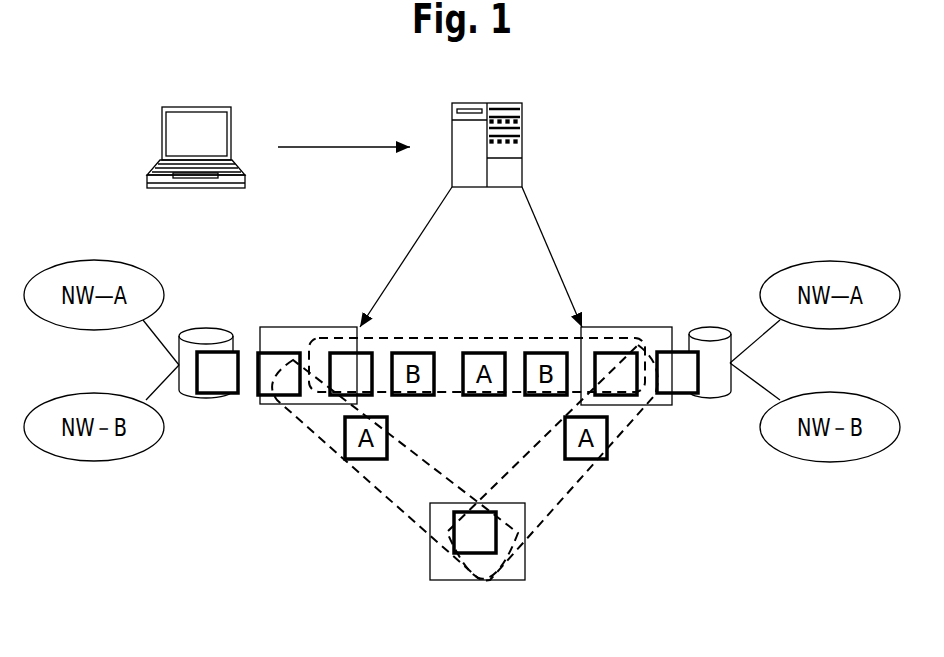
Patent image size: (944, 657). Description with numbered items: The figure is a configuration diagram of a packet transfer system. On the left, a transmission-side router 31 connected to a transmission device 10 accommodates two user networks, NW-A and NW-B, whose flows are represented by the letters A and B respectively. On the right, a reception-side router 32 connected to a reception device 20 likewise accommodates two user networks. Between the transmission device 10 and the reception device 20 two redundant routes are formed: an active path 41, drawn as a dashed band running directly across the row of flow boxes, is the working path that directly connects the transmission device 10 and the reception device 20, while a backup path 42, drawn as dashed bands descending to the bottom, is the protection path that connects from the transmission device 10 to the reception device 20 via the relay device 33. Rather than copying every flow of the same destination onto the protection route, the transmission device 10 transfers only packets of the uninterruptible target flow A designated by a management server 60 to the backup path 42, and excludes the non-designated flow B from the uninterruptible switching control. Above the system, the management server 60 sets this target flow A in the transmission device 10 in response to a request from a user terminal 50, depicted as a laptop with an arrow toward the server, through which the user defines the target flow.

The transmission device 10 is at (315, 342).
The reception device 20 is at (626, 342).
The transmission-side router 31 is at (216, 339).
The reception-side router 32 is at (708, 340).
The relay device 33 is at (457, 564).
The active path 41 is at (477, 342).
The backup path 42 is at (465, 462).
The user terminal 50 is at (196, 123).
The management server 60 is at (510, 123).